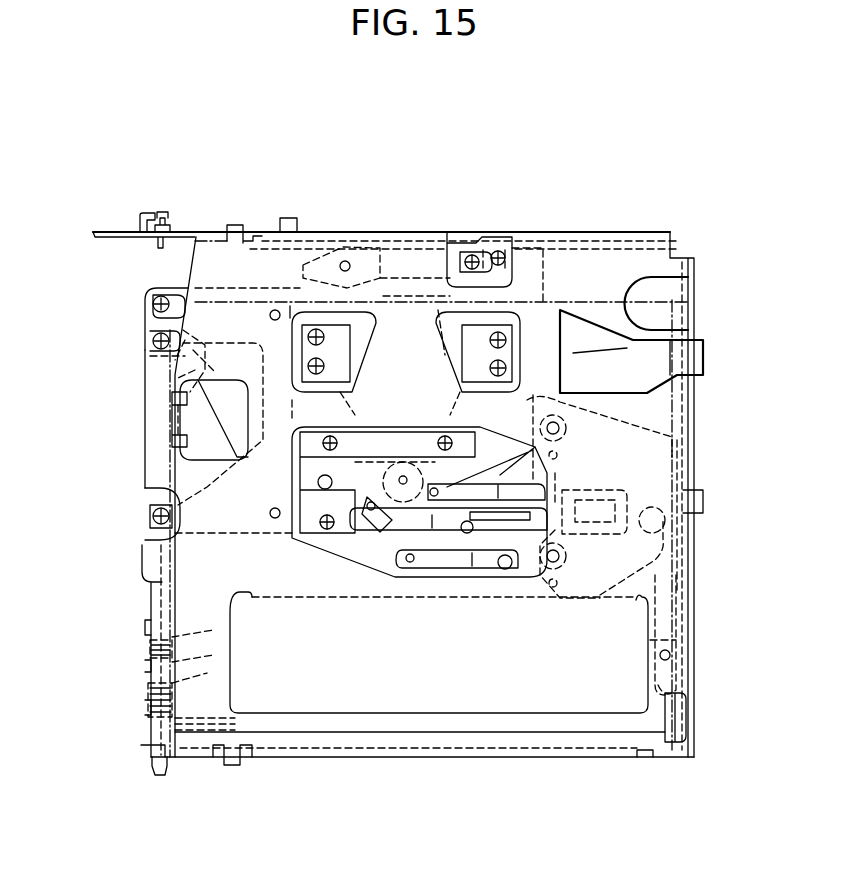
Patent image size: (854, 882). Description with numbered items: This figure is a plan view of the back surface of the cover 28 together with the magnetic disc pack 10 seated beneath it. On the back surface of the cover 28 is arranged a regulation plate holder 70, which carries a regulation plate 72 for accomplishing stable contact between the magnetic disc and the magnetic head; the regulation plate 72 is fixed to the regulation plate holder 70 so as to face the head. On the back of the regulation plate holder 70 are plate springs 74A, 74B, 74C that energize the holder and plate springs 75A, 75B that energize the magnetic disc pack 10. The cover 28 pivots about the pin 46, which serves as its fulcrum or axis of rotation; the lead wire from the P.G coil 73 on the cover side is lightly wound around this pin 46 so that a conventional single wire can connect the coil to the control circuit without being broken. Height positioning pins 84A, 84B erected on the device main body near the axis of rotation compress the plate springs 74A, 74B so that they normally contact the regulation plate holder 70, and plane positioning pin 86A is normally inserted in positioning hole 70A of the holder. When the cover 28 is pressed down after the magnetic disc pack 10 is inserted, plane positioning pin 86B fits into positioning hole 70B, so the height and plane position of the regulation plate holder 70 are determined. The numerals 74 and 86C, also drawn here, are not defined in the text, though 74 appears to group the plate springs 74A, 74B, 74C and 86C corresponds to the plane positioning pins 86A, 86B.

The magnetic disc pack 10 is at (437, 733).
The cover 28 is at (570, 272).
The pin 46 is at (170, 226).
The regulation plate holder 70 is at (585, 355).
The positioning hole 70A is at (153, 341).
The positioning hole 70B is at (503, 252).
The regulation plate 72 is at (398, 355).
The P.G coil 73 is at (403, 486).
The opening 74 is at (150, 472).
The plate spring 74A is at (153, 305).
The plate spring 74B is at (153, 516).
The plate spring 74C is at (467, 256).
The plate spring 75A is at (180, 382).
The plate spring 75B is at (690, 580).
The height positioning pin 84A is at (150, 292).
The height positioning pin 84B is at (150, 505).
The plane positioning pin 86A is at (148, 356).
The plane positioning pin 86B is at (507, 250).
The engaging hole 86C is at (485, 250).